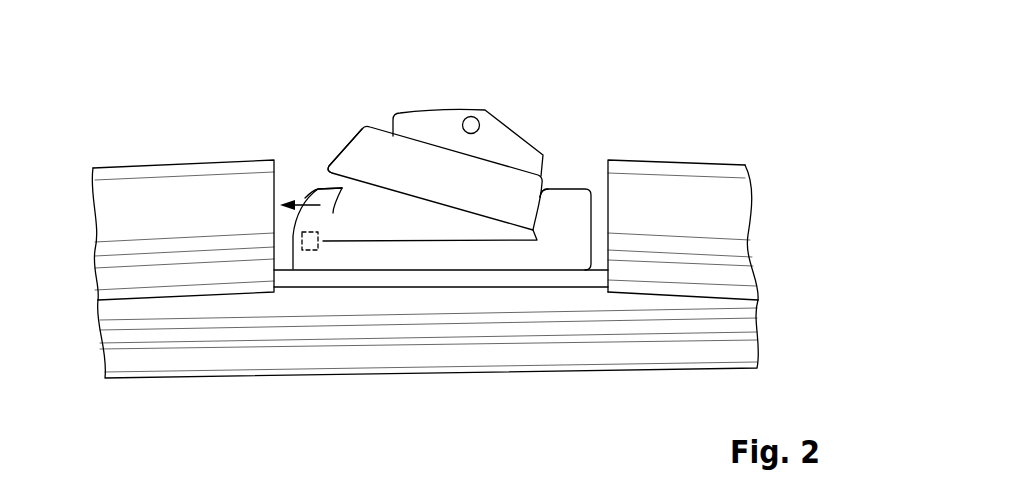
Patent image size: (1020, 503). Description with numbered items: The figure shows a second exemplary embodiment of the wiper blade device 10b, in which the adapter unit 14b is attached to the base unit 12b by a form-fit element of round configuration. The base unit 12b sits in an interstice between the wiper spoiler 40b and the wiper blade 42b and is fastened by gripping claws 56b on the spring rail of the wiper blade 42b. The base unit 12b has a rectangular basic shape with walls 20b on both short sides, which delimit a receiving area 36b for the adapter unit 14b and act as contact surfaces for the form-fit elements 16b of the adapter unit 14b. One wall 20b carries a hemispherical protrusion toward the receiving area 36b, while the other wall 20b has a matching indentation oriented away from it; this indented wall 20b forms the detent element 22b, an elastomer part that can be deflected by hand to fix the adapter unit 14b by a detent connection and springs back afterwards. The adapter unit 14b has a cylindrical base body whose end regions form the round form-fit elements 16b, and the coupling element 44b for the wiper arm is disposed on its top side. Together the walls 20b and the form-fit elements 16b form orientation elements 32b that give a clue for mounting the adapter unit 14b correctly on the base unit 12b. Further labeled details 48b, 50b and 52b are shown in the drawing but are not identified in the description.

The wiper blade device 10b is at (664, 80).
The base unit 12b is at (507, 257).
The adapter unit 14b is at (493, 92).
The form-fit elements 16b is at (345, 150).
The walls 20b is at (547, 222).
The detent element 22b is at (318, 188).
The orientation elements 32b is at (322, 222).
The receiving area 36b is at (403, 222).
The wiper spoiler 40b is at (173, 183).
The wiper blade 42b is at (645, 348).
The coupling element 44b is at (422, 127).
The hook tip 48b is at (333, 213).
The end section of clip 50b is at (337, 153).
The hole 52b is at (473, 124).
The gripping claws 56b is at (312, 252).